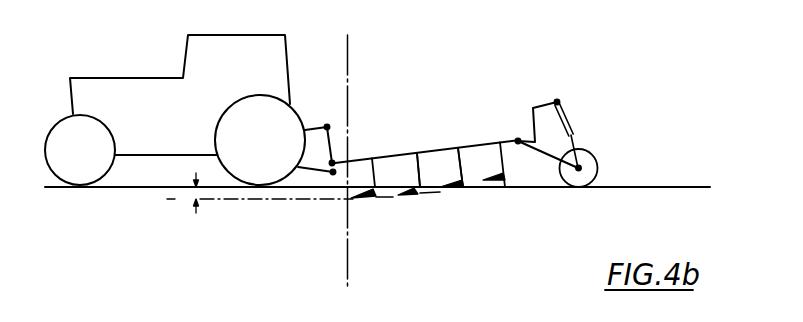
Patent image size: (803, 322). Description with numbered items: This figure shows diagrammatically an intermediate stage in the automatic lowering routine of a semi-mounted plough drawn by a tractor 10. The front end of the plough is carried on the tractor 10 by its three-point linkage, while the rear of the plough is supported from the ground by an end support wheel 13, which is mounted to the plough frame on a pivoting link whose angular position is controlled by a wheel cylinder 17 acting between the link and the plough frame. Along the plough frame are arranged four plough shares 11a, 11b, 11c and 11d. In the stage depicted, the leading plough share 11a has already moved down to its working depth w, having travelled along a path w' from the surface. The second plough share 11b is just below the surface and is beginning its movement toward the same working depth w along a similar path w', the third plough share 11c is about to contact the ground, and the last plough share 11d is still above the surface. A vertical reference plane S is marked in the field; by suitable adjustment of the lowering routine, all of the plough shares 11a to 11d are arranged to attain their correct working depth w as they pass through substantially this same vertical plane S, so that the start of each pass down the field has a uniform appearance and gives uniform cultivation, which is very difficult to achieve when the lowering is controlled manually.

The tractor 10 is at (112, 88).
The leading plough share 11a is at (373, 197).
The second plough share 11b is at (416, 168).
The third plough share 11c is at (462, 160).
The plough share 11d is at (508, 176).
The wheel 13 is at (590, 166).
The wheel cylinder 17 is at (572, 122).
The vertical plane S is at (349, 75).
The working depth w is at (257, 203).
The path w' is at (425, 216).